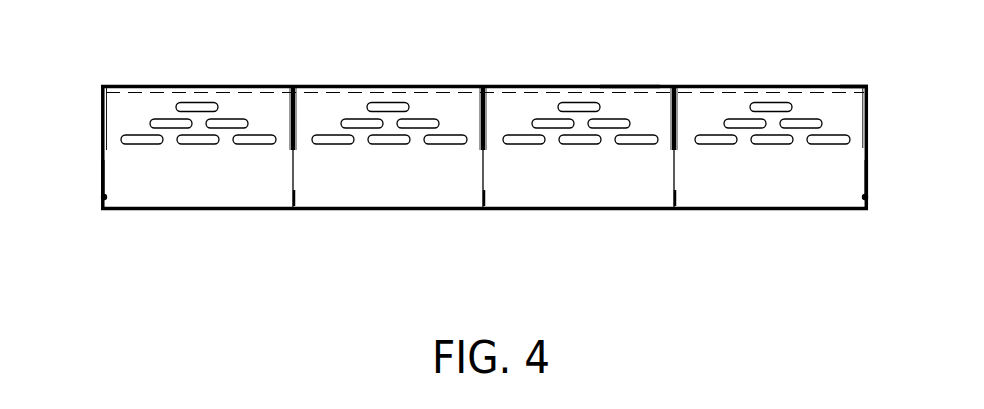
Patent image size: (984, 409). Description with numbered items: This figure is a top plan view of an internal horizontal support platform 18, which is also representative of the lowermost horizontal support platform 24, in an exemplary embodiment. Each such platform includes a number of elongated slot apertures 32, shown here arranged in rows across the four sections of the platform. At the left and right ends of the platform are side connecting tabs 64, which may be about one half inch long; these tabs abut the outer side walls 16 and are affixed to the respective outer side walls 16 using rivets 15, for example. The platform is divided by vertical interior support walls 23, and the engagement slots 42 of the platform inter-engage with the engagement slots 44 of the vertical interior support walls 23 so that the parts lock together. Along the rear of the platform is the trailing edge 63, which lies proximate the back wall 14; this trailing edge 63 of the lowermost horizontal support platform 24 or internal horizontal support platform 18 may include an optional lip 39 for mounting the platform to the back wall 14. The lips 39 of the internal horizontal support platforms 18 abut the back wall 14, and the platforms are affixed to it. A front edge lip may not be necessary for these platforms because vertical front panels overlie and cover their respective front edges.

The back wall 14 is at (720, 92).
The rivets 15 is at (101, 198).
The outer side walls 16 is at (101, 98).
The internal horizontal support platforms 18 is at (563, 198).
The vertical interior support walls 23 is at (293, 163).
The lowermost horizontal support platform 24 is at (637, 198).
The elongated slot apertures 32 is at (199, 103).
The lips 39 is at (788, 92).
The engagement slots 42 is at (482, 85).
The engagement slots 44 is at (483, 92).
The trailing edge 63 is at (627, 86).
The side connecting tabs 64 is at (103, 197).